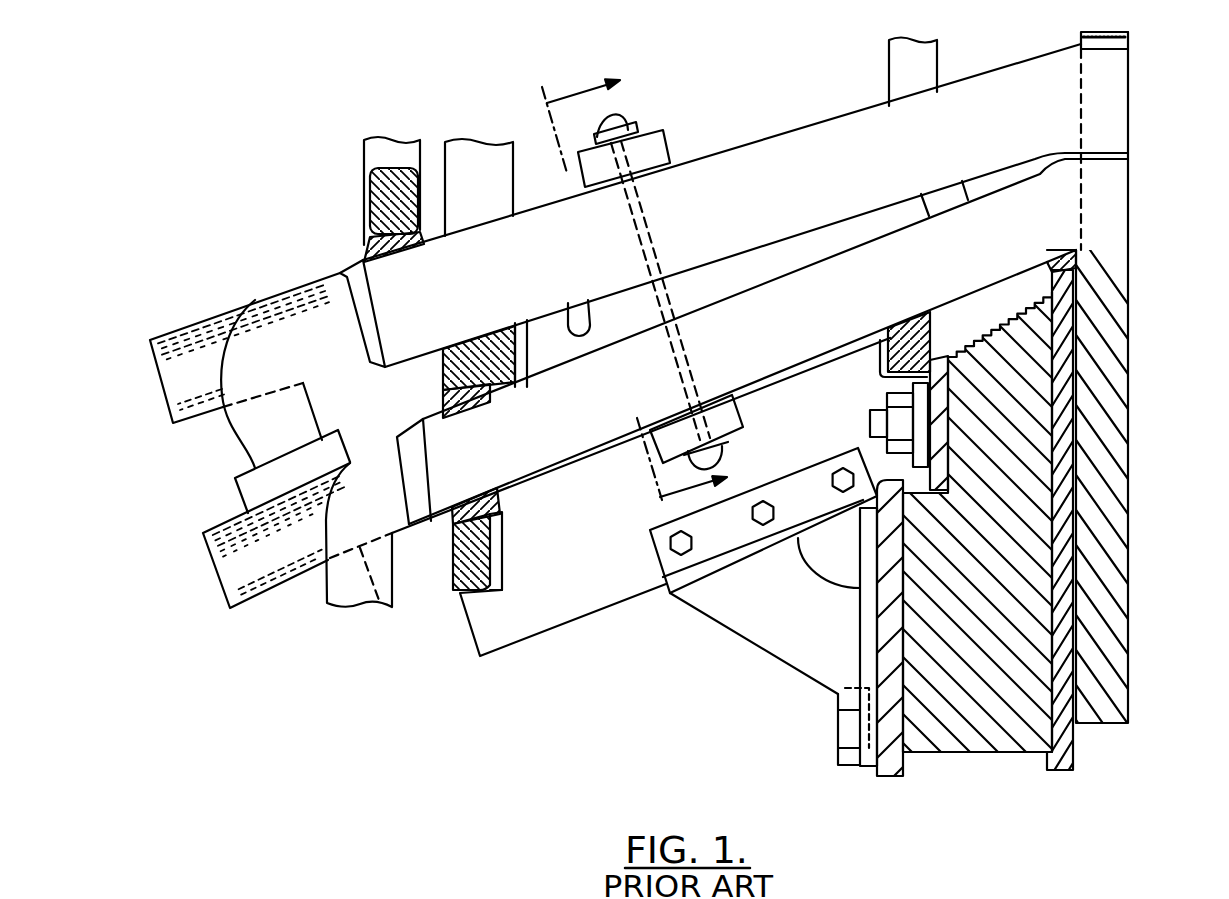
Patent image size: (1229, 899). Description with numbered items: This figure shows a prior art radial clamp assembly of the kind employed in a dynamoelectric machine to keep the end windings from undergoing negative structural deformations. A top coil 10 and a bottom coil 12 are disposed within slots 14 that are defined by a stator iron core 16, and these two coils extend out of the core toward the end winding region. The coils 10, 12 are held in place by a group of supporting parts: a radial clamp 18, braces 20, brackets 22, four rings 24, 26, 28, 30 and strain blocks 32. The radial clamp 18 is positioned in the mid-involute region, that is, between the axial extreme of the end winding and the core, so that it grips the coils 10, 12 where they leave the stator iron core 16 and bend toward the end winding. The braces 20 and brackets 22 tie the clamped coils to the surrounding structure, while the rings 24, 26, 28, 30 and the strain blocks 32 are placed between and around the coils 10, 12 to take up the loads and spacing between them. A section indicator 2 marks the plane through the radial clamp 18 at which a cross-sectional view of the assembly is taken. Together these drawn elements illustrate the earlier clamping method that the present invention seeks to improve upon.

The section line for FIG. 2 is at (647, 281).
The top coil 10 is at (767, 133).
The bottom coil 12 is at (753, 290).
The slots 14 is at (1103, 250).
The stator iron core 16 is at (968, 752).
The radial clamp 18 is at (650, 127).
The braces 20 is at (572, 617).
The brackets 22 is at (744, 640).
The ring 24 is at (443, 395).
The ring 26 is at (453, 562).
The ring 28 is at (937, 330).
The ring 30 is at (372, 210).
The strain blocks 32 is at (588, 300).